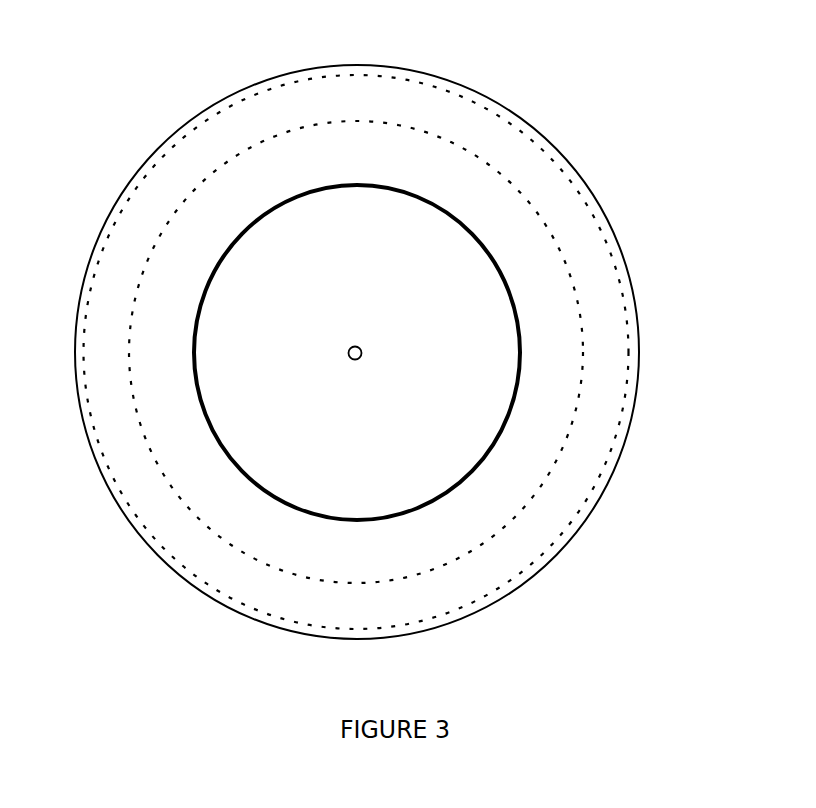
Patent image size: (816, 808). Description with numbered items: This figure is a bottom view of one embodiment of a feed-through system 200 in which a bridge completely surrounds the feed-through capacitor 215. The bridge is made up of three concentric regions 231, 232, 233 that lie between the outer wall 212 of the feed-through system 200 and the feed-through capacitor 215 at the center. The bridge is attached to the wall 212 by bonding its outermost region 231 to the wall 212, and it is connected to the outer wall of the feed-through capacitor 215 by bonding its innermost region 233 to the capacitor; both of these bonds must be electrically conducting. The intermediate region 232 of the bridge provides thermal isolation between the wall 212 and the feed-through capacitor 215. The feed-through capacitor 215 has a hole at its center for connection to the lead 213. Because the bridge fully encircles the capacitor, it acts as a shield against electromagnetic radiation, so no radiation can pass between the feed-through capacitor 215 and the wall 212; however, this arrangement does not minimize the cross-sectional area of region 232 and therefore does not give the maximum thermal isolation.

The feed-through system 200 is at (76, 95).
The wall 212 is at (602, 282).
The lead 213 is at (361, 349).
The feed-through capacitor 215 is at (429, 457).
The bridge region 231 is at (575, 170).
The bridge region 232 is at (448, 165).
The bridge region 233 is at (520, 355).